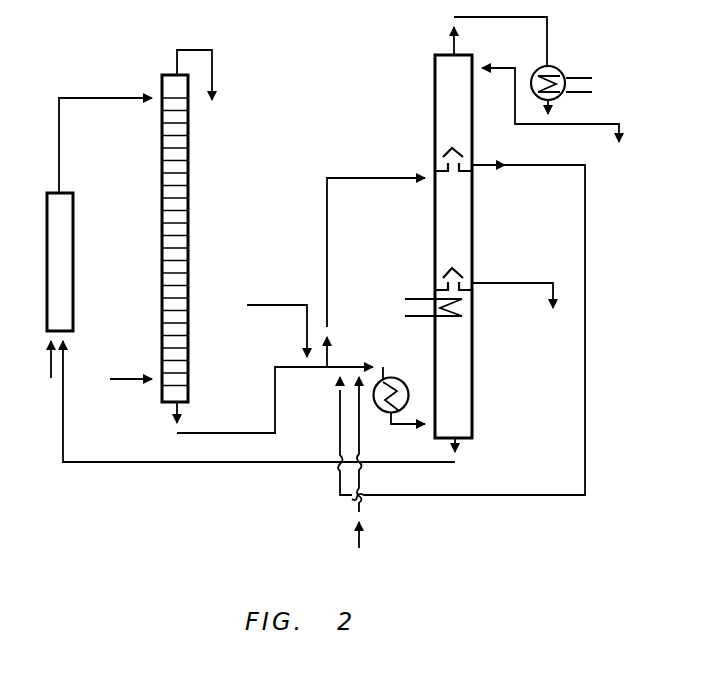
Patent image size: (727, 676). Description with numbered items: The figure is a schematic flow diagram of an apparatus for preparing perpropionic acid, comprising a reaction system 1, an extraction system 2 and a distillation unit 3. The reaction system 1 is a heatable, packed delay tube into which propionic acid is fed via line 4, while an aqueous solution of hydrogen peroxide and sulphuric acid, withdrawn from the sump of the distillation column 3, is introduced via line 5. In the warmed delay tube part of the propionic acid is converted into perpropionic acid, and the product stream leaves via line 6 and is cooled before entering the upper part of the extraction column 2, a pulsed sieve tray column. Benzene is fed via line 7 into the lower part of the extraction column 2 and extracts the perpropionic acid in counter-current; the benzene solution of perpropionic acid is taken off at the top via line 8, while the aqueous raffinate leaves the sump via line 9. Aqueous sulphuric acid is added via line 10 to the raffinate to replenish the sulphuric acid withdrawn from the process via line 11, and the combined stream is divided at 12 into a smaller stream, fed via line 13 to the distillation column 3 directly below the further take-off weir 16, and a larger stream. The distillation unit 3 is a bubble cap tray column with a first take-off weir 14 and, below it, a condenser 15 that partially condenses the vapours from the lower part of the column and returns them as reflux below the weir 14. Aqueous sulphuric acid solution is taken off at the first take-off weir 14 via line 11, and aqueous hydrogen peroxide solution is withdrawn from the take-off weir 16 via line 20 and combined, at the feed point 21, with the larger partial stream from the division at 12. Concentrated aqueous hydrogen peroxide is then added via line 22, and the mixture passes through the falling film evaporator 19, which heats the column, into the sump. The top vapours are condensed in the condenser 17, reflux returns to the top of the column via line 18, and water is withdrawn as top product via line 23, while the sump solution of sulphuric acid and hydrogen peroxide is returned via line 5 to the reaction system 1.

The reaction system 1 is at (55, 210).
The extraction system 2 is at (162, 190).
The distillation unit 3 is at (443, 83).
The line 4 is at (51, 370).
The line 5 is at (165, 462).
The line 6 is at (58, 121).
The line 7 is at (128, 379).
The line 8 is at (212, 72).
The line 9 is at (218, 432).
The line 10 is at (281, 305).
The line 11 is at (528, 283).
The dividing point 12 is at (326, 376).
The line 13 is at (326, 216).
The first take-off weir 14 is at (445, 272).
The condenser 15 is at (463, 313).
The further take-off weir 16 is at (447, 158).
The condenser 17 is at (553, 68).
The line 18 is at (515, 112).
The falling film evaporator 19 is at (408, 382).
The line 20 is at (473, 497).
The feed point 21 is at (340, 367).
The line 22 is at (362, 538).
The line 23 is at (598, 128).